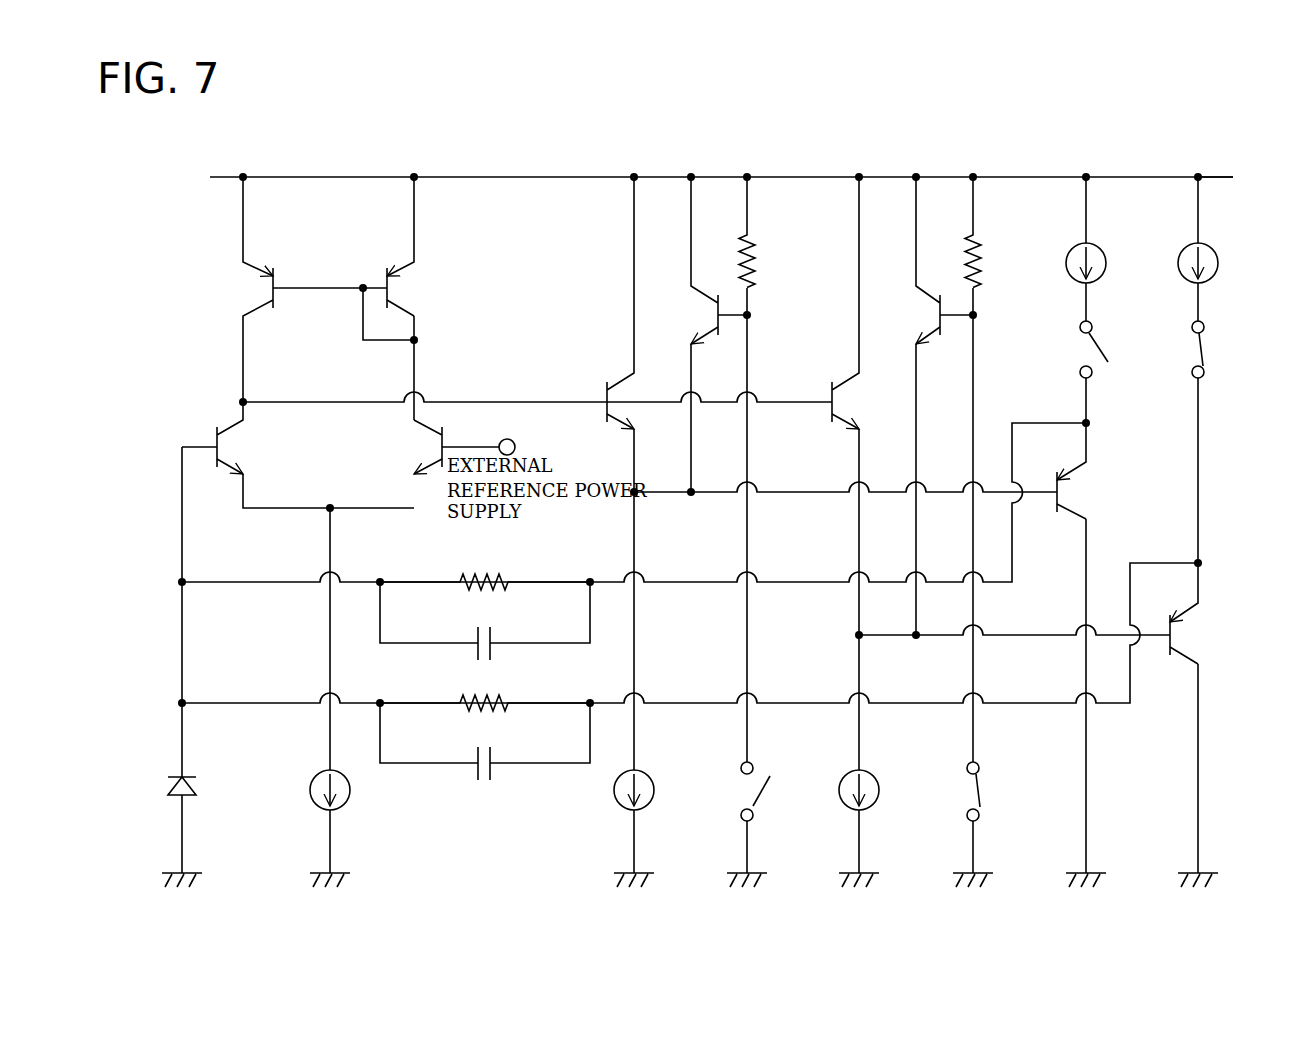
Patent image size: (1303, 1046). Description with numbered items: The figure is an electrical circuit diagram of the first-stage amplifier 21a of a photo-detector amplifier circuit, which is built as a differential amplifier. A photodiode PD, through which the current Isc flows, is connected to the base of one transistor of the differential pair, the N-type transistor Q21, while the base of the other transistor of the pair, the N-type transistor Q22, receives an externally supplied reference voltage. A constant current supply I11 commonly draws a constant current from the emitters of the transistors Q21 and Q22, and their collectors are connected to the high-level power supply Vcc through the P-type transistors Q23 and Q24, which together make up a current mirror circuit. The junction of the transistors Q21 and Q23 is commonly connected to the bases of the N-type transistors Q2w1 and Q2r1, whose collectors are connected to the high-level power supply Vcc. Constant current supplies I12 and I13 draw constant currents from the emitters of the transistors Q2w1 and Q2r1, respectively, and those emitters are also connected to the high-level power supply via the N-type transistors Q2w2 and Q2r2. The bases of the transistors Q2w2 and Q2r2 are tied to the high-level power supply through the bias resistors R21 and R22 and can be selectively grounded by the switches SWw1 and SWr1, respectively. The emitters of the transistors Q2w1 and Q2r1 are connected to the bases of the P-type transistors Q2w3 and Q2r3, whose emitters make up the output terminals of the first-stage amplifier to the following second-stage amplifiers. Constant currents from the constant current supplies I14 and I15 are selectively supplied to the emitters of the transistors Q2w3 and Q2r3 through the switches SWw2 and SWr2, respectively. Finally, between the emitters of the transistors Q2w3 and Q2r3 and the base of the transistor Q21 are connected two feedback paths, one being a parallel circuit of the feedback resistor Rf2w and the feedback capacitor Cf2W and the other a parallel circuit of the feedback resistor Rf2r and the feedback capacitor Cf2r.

The first-stage amplifier 21a is at (127, 227).
The power supply voltage Vcc is at (1239, 177).
The P-type transistor Q23 is at (270, 290).
The P-type transistor Q24 is at (390, 292).
The N-type transistor Q21 is at (220, 448).
The N-type transistor Q22 is at (440, 448).
The N-type transistor Q2r1 is at (605, 388).
The N-type transistor Q2r2 is at (715, 322).
The P-type transistor Q2r3 is at (1062, 497).
The N-type transistor Q2w1 is at (828, 422).
The N-type transistor Q2w2 is at (940, 320).
The P-type transistor Q2w3 is at (1175, 641).
The bias resistor R22 is at (752, 240).
The bias resistor R21 is at (978, 240).
The constant current supply I15 is at (1106, 272).
The constant current supply I14 is at (1218, 272).
The constant current supply I13 is at (616, 801).
The constant current supply I12 is at (841, 801).
The constant current supply I11 is at (312, 801).
The switch SWr2 is at (1080, 334).
The switch SWw2 is at (1192, 334).
The switch SWr1 is at (742, 774).
The switch SWw1 is at (966, 774).
The feedback resistor Rf2r is at (482, 570).
The feedback resistor Rf2w is at (482, 691).
The feedback capacitor Cf2r is at (476, 654).
The feedback capacitor Cf2W is at (476, 782).
The photocurrent Isc is at (147, 677).
The photodiode PD is at (168, 781).